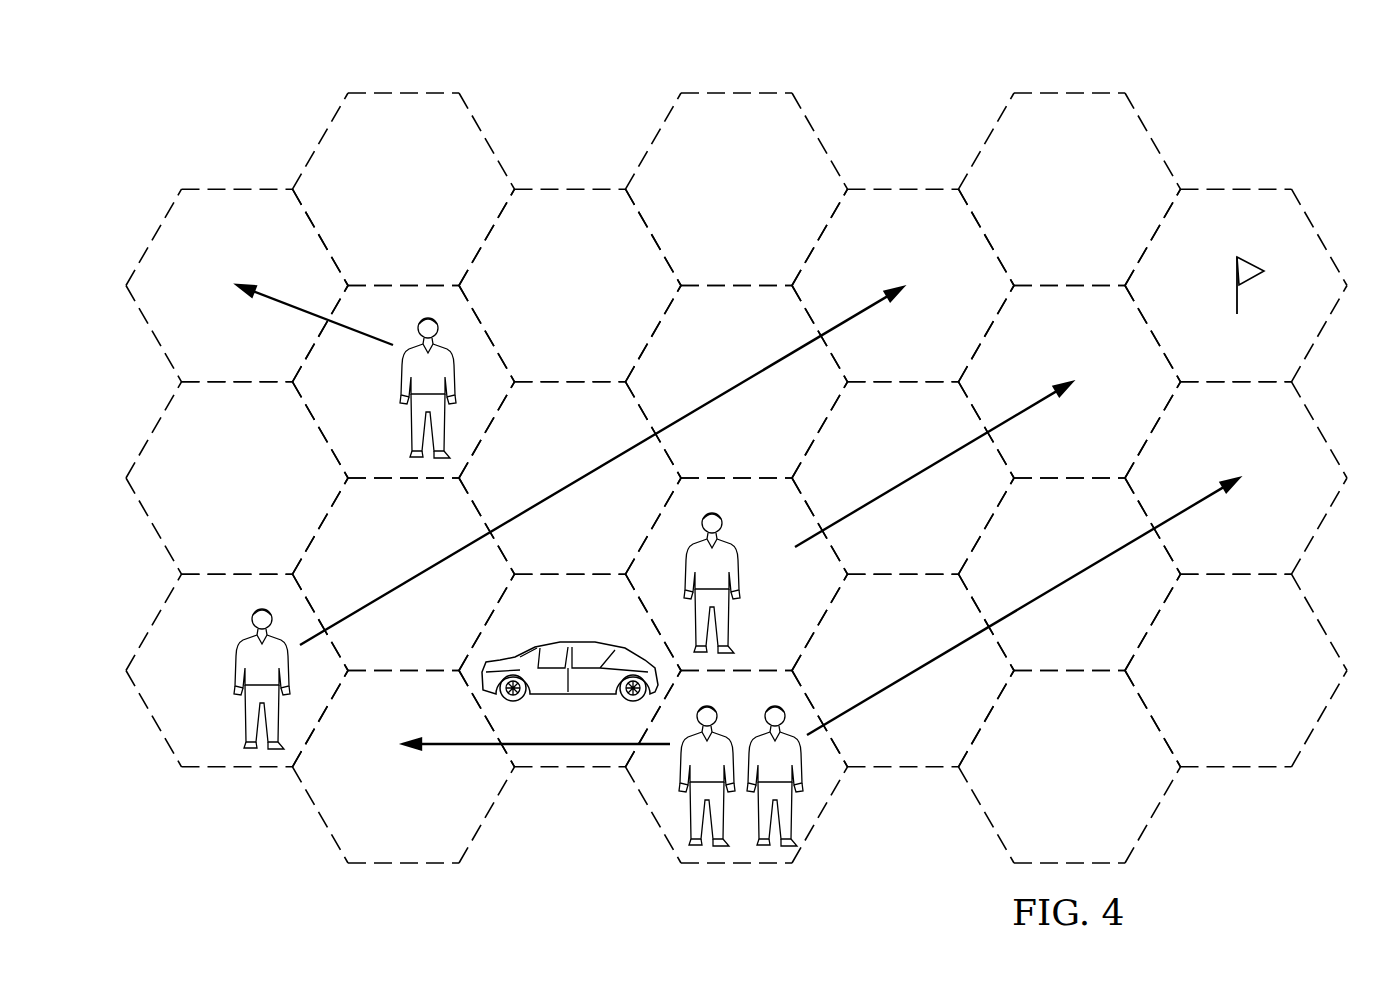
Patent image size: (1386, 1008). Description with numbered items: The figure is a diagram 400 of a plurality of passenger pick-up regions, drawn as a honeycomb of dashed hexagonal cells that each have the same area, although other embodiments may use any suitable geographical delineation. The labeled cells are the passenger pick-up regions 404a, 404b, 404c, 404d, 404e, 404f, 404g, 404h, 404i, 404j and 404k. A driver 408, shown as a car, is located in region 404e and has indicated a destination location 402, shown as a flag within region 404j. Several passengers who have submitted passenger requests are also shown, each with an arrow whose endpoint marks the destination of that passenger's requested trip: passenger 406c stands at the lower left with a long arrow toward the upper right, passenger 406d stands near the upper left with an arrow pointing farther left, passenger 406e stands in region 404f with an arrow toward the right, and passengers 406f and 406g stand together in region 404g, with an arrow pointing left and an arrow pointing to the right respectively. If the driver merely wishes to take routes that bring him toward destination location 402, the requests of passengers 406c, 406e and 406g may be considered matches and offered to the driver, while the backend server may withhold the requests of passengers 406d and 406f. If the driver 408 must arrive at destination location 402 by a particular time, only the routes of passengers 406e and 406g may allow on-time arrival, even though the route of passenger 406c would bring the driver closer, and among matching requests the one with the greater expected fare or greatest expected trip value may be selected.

The diagram 400 is at (534, 58).
The destination location 402 is at (1276, 244).
The passenger pick-up region 404a is at (238, 195).
The passenger pick-up region 404b is at (238, 760).
The passenger pick-up region 404c is at (405, 293).
The passenger pick-up region 404d is at (403, 858).
The passenger pick-up region 404e is at (570, 762).
The passenger pick-up region 404f is at (738, 487).
The passenger pick-up region 404g is at (737, 855).
The passenger pick-up region 404h is at (905, 196).
The passenger pick-up region 404i is at (1071, 292).
The passenger pick-up region 404j is at (1351, 225).
The passenger pick-up region 404k is at (1319, 519).
The passenger 406c is at (240, 648).
The passenger 406d is at (403, 353).
The passenger 406e is at (738, 557).
The passenger 406f is at (692, 815).
The passenger 406g is at (792, 790).
The driver 408 is at (557, 642).